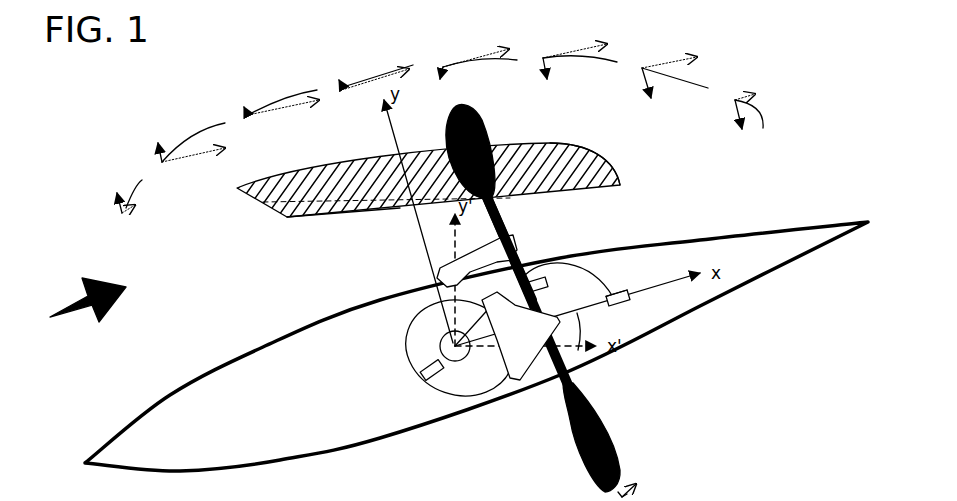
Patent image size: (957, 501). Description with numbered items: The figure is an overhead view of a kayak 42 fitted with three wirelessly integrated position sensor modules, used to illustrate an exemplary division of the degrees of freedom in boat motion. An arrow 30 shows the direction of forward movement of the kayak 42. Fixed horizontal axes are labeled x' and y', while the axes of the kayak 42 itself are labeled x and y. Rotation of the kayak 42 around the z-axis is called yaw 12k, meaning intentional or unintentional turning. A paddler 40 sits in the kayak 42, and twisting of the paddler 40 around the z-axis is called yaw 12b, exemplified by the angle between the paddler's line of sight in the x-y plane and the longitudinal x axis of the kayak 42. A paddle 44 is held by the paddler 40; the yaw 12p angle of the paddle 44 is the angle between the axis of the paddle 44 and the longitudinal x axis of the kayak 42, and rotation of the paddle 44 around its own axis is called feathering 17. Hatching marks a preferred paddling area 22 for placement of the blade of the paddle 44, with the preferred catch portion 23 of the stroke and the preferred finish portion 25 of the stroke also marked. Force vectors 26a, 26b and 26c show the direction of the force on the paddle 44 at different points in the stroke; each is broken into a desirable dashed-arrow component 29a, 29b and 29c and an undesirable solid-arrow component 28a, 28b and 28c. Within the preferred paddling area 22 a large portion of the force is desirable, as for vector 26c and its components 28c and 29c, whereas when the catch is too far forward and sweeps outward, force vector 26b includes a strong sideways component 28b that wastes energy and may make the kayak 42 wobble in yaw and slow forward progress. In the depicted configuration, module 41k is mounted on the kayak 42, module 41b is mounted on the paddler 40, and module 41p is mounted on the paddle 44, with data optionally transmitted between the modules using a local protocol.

The yaw of the paddler 12b is at (500, 325).
The yaw of the kayak 12k is at (578, 338).
The yaw angle of the paddle 12p is at (615, 296).
The feathering 17 is at (647, 495).
The preferred paddling area 22 is at (542, 143).
The preferred catch portion of the stroke 23 is at (603, 190).
The preferred finish portion of the stroke 25 is at (322, 216).
The force vector 26a is at (695, 88).
The force vector 26b is at (763, 128).
The force vector 26c is at (398, 72).
The undesirable component 28a is at (645, 93).
The undesirable component 28b is at (740, 132).
The undesirable component 28c is at (348, 90).
The desirable component 29a is at (693, 55).
The desirable component 29b is at (757, 97).
The desirable component 29c is at (407, 77).
The direction of forward movement 30 is at (117, 300).
The paddler 40 is at (408, 333).
The module mounted on paddler 41b is at (420, 376).
The module mounted on kayak 41k is at (620, 305).
The module mounted on paddle 41p is at (548, 283).
The kayak 42 is at (263, 347).
The paddle 44 is at (573, 436).